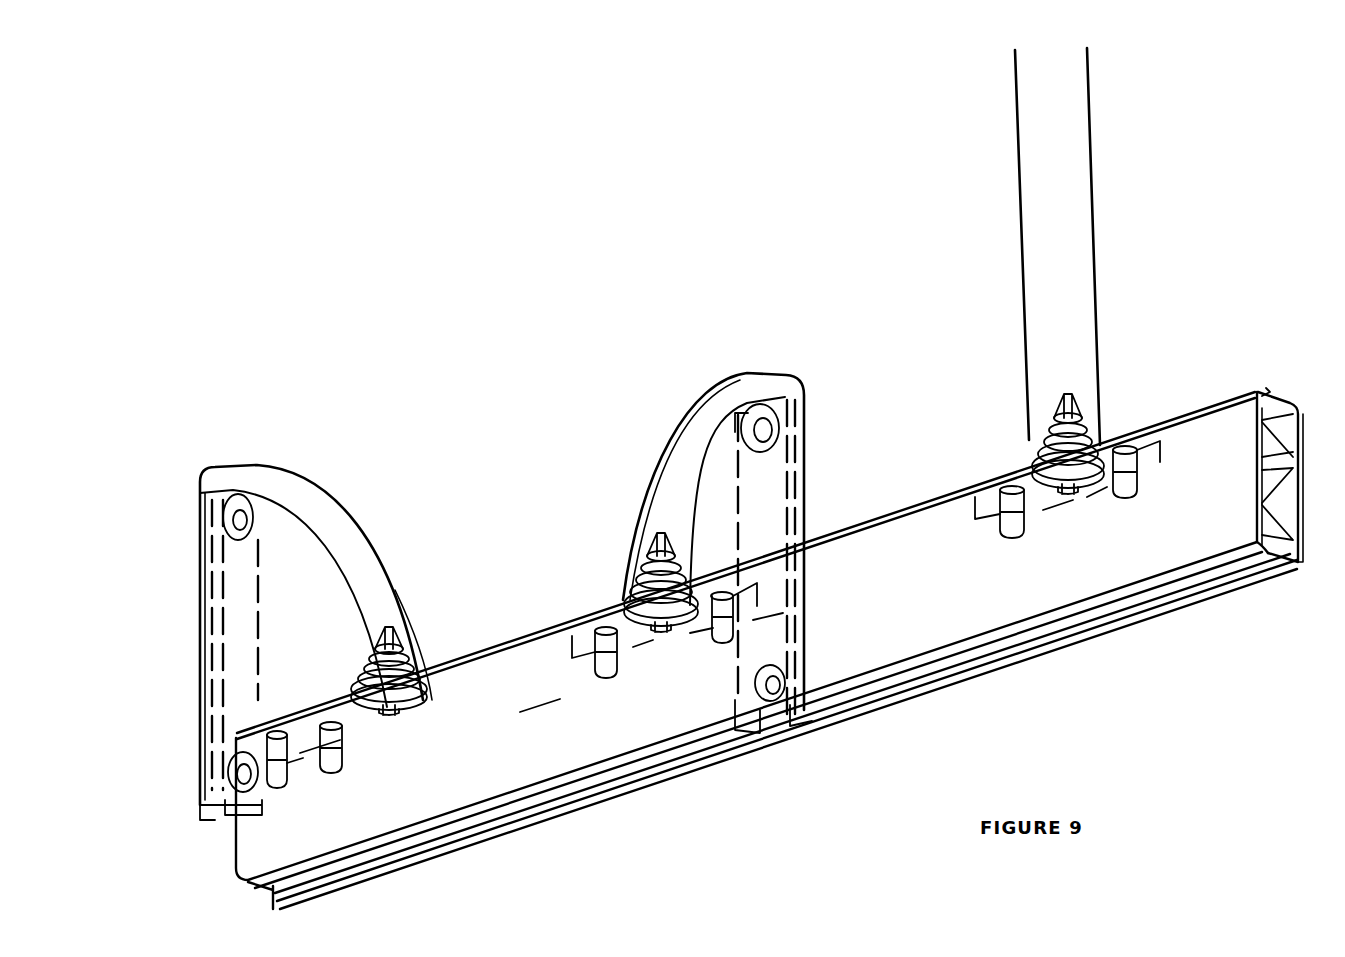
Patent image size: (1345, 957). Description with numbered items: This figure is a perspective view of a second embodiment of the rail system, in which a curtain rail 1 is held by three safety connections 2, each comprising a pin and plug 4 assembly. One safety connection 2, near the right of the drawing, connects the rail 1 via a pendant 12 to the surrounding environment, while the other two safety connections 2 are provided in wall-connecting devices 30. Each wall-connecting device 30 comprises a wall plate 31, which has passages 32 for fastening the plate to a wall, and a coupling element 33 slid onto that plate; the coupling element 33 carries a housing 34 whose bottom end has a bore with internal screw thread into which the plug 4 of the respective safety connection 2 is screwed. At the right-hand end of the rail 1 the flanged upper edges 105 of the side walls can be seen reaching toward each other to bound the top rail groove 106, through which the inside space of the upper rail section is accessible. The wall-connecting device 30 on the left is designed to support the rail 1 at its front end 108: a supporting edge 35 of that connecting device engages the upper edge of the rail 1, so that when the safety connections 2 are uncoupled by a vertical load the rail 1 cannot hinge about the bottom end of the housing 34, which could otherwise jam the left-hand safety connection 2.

The curtain rail 1 is at (1173, 527).
The safety connection 2 is at (433, 653).
The plug 4 is at (363, 667).
The pendant 12 is at (1077, 177).
The wall-connecting device 30 is at (333, 483).
The wall plate 31 is at (233, 800).
The passage 32 is at (230, 520).
The coupling element 33 is at (200, 490).
The housing 34 is at (277, 483).
The supporting edge 35 is at (235, 733).
The upper edge 105 is at (1262, 390).
The top rail groove 106 is at (1268, 395).
The front end 108 is at (226, 838).